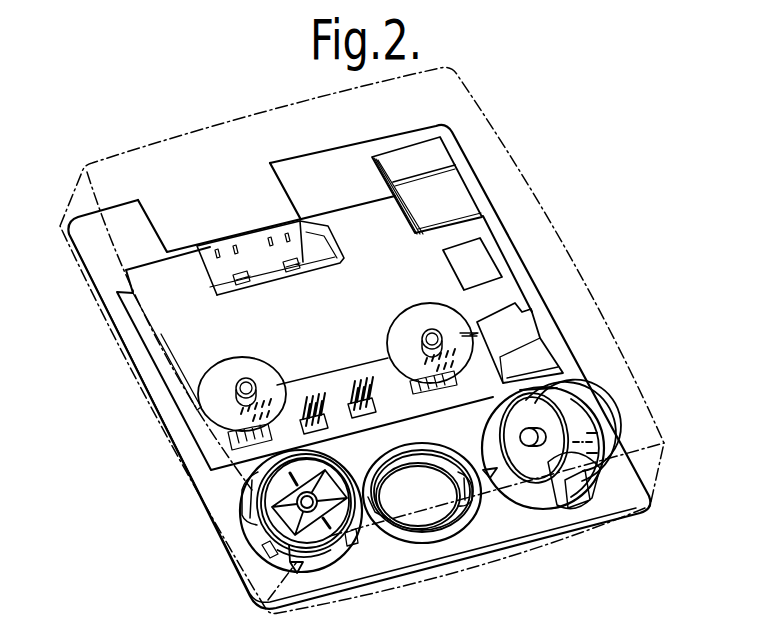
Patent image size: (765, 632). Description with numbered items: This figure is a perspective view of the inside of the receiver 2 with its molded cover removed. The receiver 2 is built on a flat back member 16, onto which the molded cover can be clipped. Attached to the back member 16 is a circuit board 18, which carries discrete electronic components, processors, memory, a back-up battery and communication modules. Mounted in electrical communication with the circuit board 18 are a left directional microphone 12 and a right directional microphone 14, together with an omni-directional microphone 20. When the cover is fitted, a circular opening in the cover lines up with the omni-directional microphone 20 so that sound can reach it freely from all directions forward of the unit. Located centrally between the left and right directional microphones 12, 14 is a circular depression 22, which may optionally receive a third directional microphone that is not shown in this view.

The receiver 2 is at (519, 105).
The left directional microphone 12 is at (262, 492).
The right directional microphone 14 is at (587, 409).
The flat back member 16 is at (480, 200).
The circuit board 18 is at (160, 302).
The omni-directional microphone 20 is at (428, 338).
The circular depression 22 is at (437, 522).